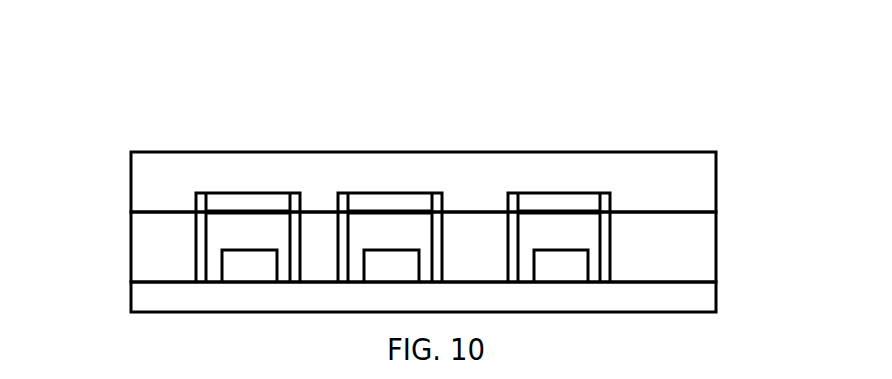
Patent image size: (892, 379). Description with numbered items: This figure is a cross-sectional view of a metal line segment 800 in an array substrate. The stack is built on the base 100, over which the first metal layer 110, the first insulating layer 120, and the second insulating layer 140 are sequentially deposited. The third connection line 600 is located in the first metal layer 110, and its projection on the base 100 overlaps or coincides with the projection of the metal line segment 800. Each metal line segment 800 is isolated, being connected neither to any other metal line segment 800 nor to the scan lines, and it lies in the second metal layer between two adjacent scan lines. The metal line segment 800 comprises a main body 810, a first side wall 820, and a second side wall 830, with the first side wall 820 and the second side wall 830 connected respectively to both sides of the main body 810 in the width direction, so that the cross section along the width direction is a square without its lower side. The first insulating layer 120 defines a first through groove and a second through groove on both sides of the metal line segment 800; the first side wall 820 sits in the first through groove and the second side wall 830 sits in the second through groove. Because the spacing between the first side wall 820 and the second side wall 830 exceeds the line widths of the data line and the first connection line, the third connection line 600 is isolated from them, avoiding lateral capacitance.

The base 100 is at (131, 303).
The first insulating layer 120 is at (131, 247).
The second insulating layer 140 is at (131, 175).
The first metal layer 110 is at (563, 270).
The third connection line 600 is at (535, 266).
The metal line segment 800 is at (436, 152).
The main body 810 is at (562, 202).
The first side wall 820 is at (505, 222).
The second side wall 830 is at (605, 222).